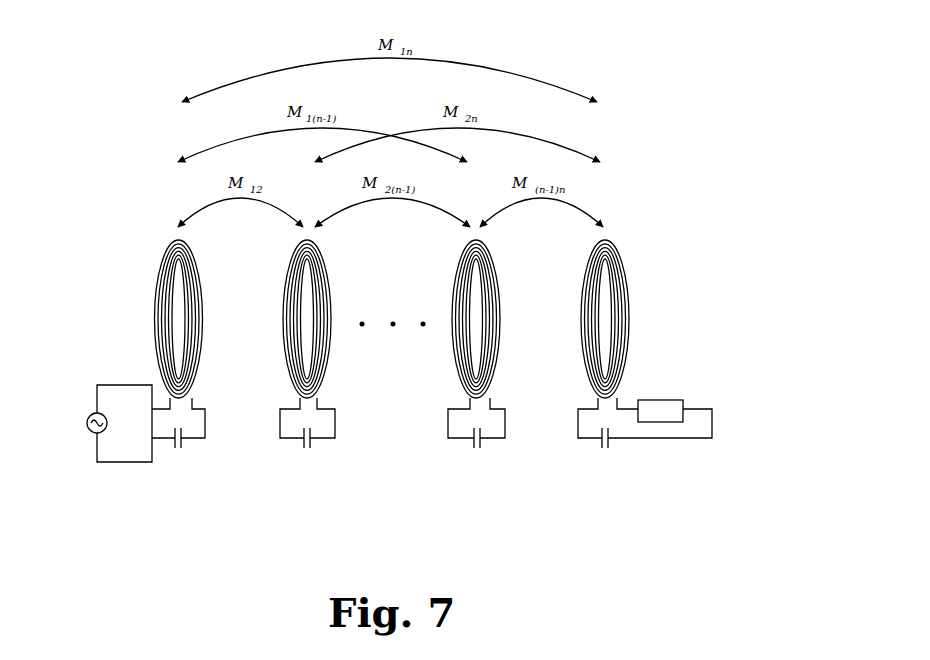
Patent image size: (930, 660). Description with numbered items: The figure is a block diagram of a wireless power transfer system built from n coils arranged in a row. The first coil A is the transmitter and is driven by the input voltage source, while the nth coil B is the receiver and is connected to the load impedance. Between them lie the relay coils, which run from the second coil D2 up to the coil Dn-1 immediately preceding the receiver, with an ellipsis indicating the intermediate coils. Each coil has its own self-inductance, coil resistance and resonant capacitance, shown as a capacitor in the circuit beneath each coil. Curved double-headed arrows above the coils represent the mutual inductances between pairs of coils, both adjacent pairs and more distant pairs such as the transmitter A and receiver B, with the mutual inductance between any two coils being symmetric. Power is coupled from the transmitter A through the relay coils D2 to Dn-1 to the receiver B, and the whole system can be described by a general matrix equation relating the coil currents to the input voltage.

The transmitter coil A is at (150, 281).
The receiver coil B is at (650, 259).
The relay coil D2 is at (271, 313).
The relay coil Dn-1 is at (512, 334).